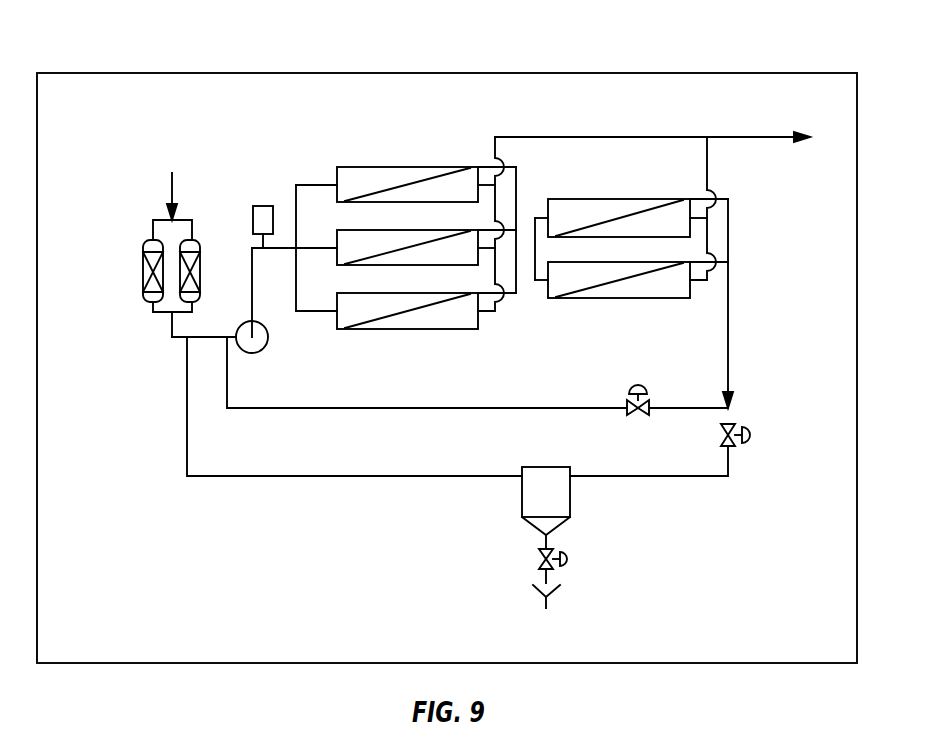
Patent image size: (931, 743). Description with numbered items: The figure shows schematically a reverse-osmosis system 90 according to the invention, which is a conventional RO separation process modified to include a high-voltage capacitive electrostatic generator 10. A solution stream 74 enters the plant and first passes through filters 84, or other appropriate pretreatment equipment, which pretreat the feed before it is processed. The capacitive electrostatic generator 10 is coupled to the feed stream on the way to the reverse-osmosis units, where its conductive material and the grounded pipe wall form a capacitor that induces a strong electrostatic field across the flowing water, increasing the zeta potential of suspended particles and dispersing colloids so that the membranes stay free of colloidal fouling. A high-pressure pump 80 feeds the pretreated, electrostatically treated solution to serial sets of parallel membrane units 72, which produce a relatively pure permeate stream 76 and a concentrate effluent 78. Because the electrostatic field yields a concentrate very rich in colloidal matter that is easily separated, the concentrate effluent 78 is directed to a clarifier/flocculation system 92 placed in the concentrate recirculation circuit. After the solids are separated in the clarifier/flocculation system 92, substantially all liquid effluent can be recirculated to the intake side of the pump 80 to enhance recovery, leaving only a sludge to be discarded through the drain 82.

The RO system 90 is at (783, 73).
The solution stream 74 is at (172, 186).
The filters 84 is at (143, 270).
The capacitive electrostatic generator 10 is at (263, 206).
The high-pressure pump 80 is at (268, 338).
The membrane units 72 is at (407, 165).
The permeate stream 76 is at (765, 139).
The concentrate effluent 78 is at (728, 336).
The clarifier/flocculation system 92 is at (572, 490).
The drain 82 is at (548, 604).